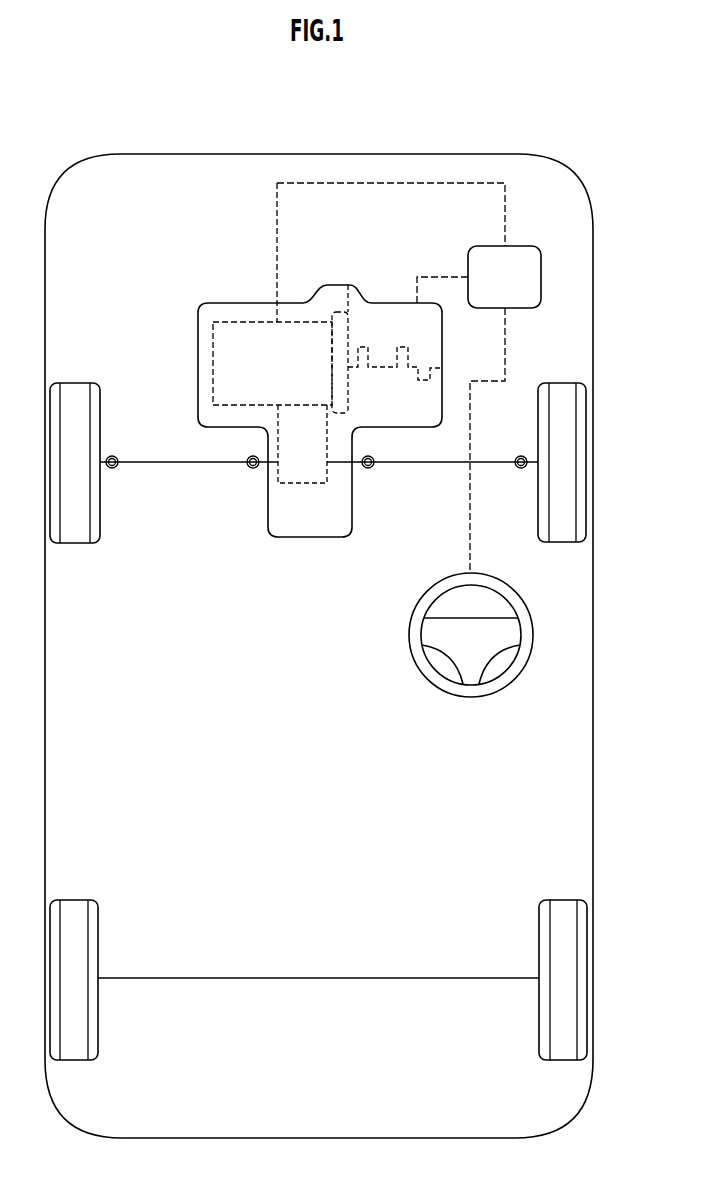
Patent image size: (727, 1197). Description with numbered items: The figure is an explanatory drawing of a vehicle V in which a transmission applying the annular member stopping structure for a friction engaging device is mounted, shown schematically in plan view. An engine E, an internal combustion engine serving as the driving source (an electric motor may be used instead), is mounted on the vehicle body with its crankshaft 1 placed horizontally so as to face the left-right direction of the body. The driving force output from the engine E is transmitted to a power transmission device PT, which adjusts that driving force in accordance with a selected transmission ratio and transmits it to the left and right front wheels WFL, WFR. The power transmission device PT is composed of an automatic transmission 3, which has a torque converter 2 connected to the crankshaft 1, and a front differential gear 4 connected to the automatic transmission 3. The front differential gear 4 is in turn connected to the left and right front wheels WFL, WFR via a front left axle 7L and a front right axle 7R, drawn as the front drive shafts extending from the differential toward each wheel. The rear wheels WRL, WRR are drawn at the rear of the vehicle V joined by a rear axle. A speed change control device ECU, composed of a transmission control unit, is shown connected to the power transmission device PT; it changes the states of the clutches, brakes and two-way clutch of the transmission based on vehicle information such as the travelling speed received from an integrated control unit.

The vehicle V is at (570, 165).
The power transmission device PT is at (258, 270).
The automatic transmission 3 is at (225, 322).
The torque converter 2 is at (343, 283).
The engine E is at (390, 303).
The crankshaft 1 is at (373, 367).
The front differential gear 4 is at (329, 475).
The speed change control device ECU is at (528, 290).
The front left axle 7L is at (210, 467).
The front right axle 7R is at (457, 467).
The left front wheel WFL is at (73, 403).
The right front wheel WFR is at (564, 396).
The rear left wheel WRL is at (75, 917).
The rear right wheel WRR is at (565, 918).